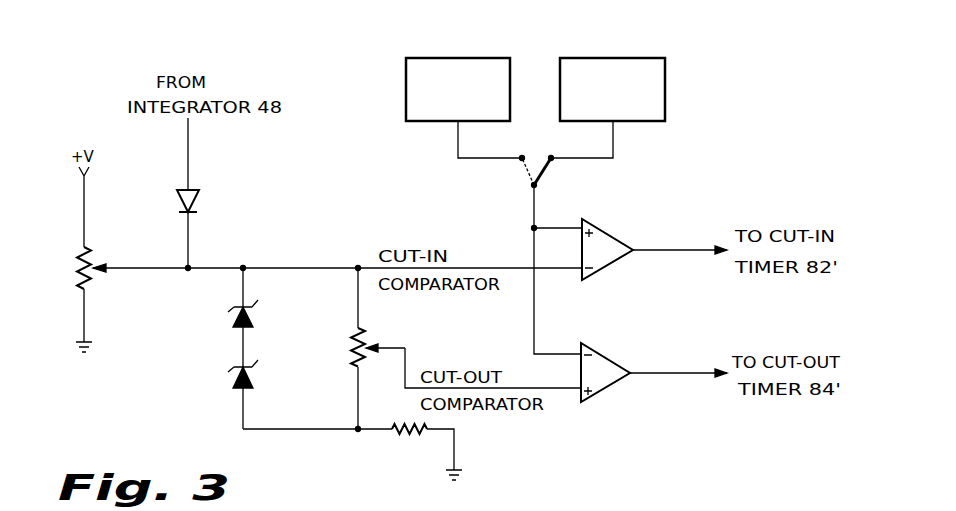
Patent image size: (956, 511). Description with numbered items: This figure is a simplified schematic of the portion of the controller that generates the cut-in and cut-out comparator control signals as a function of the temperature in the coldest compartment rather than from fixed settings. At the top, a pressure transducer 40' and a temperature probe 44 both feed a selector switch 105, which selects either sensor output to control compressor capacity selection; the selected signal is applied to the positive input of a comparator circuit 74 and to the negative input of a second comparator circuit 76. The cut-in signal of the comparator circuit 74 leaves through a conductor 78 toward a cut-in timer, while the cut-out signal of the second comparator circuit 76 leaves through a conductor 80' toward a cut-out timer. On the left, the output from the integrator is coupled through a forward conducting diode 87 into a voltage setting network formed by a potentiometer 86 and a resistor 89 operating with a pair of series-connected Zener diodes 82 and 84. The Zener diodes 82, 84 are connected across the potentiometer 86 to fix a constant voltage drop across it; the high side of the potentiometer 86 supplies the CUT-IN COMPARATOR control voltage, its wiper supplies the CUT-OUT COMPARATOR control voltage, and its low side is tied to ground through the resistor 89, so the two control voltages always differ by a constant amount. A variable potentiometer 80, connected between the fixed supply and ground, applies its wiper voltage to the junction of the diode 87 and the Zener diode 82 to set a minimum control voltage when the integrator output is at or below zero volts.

The variable potentiometer 80 is at (106, 299).
The forward conducting diode 87 is at (200, 206).
The Zener diode 82 is at (255, 317).
The Zener diode 84 is at (257, 381).
The potentiometer 86 is at (352, 349).
The resistor 89 is at (401, 440).
The pressure transducer 40' is at (443, 108).
The temperature probe 44 is at (665, 112).
The selector switch 105 is at (541, 177).
The comparator circuit 74 is at (600, 231).
The conductor 78 is at (675, 252).
The second comparator circuit 76 is at (597, 396).
The conductor 80' is at (678, 390).